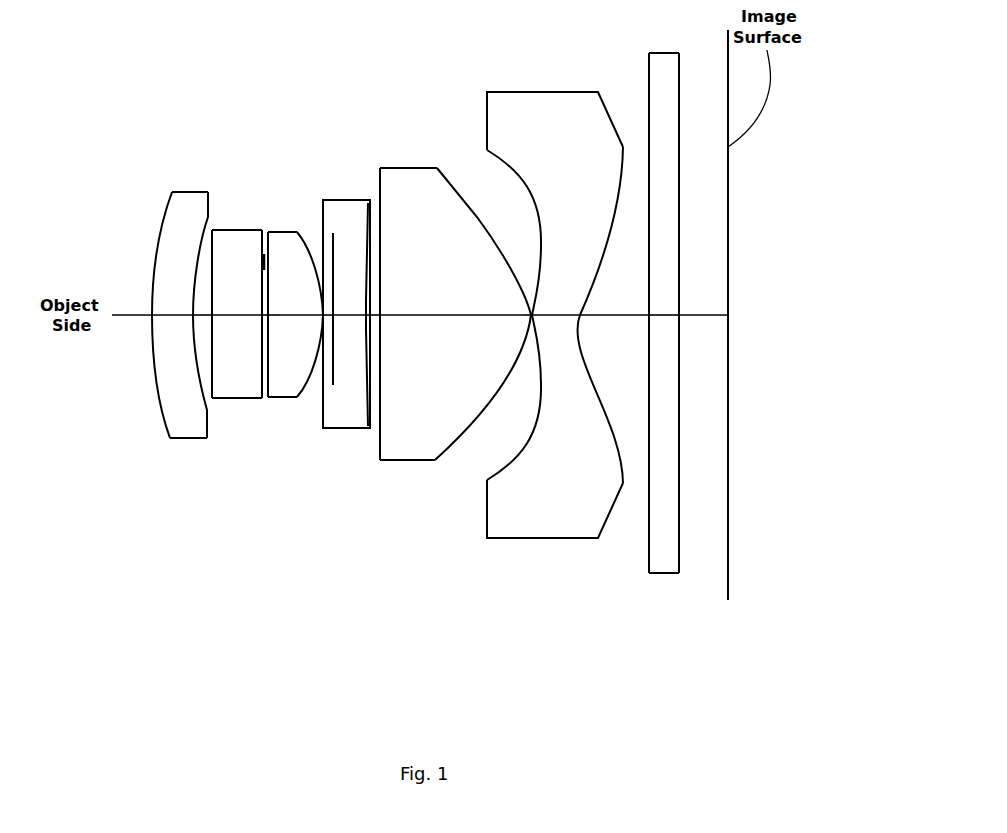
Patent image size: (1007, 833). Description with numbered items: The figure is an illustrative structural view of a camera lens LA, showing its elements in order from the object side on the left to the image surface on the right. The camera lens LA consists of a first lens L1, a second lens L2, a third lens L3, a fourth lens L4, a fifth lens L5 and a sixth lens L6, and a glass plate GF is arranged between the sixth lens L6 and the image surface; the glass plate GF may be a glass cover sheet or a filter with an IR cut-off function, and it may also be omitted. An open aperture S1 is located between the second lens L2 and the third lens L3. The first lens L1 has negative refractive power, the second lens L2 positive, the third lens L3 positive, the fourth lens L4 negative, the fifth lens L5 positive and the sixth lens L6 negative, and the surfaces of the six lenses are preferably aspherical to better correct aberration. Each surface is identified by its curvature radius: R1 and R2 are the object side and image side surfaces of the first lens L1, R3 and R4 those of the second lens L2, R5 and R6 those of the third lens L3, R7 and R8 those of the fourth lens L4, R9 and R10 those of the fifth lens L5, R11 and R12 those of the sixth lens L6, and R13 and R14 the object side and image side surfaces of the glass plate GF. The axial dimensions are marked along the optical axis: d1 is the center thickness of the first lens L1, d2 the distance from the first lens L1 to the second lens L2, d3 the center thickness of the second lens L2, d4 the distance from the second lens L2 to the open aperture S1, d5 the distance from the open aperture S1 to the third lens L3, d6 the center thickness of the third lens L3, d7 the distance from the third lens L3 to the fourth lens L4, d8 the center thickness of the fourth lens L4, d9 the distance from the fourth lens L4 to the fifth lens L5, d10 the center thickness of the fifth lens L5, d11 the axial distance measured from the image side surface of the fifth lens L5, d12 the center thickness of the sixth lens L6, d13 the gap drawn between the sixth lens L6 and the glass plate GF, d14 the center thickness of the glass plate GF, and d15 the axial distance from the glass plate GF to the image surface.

The camera lens LA is at (176, 124).
The first lens L1 is at (145, 315).
The second lens L2 is at (205, 356).
The third lens L3 is at (266, 380).
The fourth lens L4 is at (316, 387).
The fifth lens L5 is at (423, 381).
The sixth lens L6 is at (501, 365).
The glass plate GF is at (627, 359).
The open aperture S1 is at (263, 262).
The curvature radius of the object side surface of the first lens R1 is at (152, 325).
The curvature radius of the image side surface of the first lens R2 is at (193, 332).
The curvature radius of the object side surface of the second lens R3 is at (212, 353).
The curvature radius of the image side surface of the second lens R4 is at (262, 333).
The curvature radius of the object side surface of the third lens R5 is at (268, 372).
The curvature radius of the image side surface of the third lens R6 is at (312, 368).
The curvature radius of the object side surface of the fourth lens R7 is at (333, 373).
The curvature radius of the image side surface of the fourth lens R8 is at (366, 368).
The curvature radius of the object side surface of the fifth lens R9 is at (380, 402).
The curvature radius of the image side surface of the fifth lens R10 is at (483, 405).
The curvature radius of the object side surface of the sixth lens R11 is at (537, 367).
The curvature radius of the image side surface of the sixth lens R12 is at (597, 373).
The curvature radius of the object side surface of the glass plate R13 is at (649, 467).
The curvature radius of the image side surface of the glass plate R14 is at (679, 480).
The center thickness of the first lens d1 is at (152, 306).
The axial distance from the first lens to the second lens d2 is at (202, 306).
The center thickness of the second lens d3 is at (237, 306).
The axial distance from the second lens to the open aperture d4 is at (265, 313).
The axial distance from the open aperture to the third lens d5 is at (276, 313).
The center thickness of the third lens d6 is at (301, 306).
The axial distance from the third lens to the fourth lens d7 is at (327, 313).
The center thickness of the fourth lens d8 is at (349, 306).
The axial distance from the fourth lens to the fifth lens d9 is at (368, 313).
The center thickness of the fifth lens d10 is at (452, 306).
The axial distance from the image side surface of the fifth lens d11 is at (530, 313).
The center thickness of the sixth lens d12 is at (557, 306).
The on-axis distance from sixth lens to optical filter d13 is at (614, 306).
The center thickness of the glass plate d14 is at (662, 313).
The axial distance from the glass plate to the image surface d15 is at (703, 306).